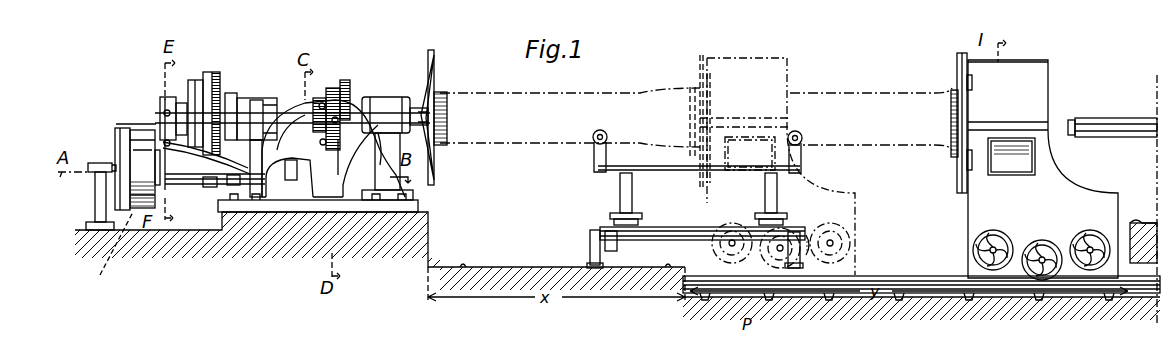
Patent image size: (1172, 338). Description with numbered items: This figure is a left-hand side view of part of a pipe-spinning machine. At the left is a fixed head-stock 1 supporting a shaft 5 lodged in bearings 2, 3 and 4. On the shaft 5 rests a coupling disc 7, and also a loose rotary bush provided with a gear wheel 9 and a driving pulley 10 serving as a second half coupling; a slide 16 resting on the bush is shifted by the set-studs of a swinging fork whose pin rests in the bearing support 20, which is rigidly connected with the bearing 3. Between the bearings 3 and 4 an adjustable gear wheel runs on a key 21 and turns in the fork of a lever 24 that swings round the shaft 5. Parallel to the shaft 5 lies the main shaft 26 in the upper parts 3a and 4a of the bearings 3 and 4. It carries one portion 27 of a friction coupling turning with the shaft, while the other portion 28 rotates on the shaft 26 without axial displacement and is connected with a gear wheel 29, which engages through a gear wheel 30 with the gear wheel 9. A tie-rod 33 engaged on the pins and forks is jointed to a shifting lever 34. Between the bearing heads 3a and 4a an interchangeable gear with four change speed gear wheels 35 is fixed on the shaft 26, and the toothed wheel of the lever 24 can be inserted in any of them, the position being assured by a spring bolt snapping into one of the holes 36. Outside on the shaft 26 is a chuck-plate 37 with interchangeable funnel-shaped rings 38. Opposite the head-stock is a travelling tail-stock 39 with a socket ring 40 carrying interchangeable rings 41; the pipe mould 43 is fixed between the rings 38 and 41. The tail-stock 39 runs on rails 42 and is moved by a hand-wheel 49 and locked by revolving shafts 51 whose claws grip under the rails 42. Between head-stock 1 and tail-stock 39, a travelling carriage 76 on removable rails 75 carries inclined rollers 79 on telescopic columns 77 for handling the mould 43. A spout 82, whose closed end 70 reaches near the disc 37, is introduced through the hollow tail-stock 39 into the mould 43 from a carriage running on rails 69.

The head-stock 1 is at (243, 207).
The bearing 2 is at (92, 200).
The bearing 3 is at (263, 190).
The upper part of bearing 3a is at (233, 93).
The bearing 4 is at (388, 185).
The upper part of bearing 4a is at (385, 100).
The shaft 5 is at (287, 177).
The coupling disc 7 is at (115, 128).
The gear wheel 9 is at (228, 185).
The driving pulley 10 is at (140, 130).
The slide 16 is at (105, 251).
The bearing support 20 is at (197, 182).
The key 21 is at (298, 180).
The lever 24 is at (337, 175).
The main shaft 26 is at (272, 98).
The portion of friction coupling 27 is at (173, 92).
The portion of friction coupling 28 is at (196, 80).
The gear wheel 29 is at (215, 72).
The gear wheel 30 is at (210, 187).
The tie-rod 33 is at (233, 187).
The shifting lever 34 is at (258, 100).
The change speed gear wheels 35 is at (334, 88).
The holes 36 is at (340, 100).
The chuck-plate 37 is at (434, 70).
The funnel-shaped rings 38 is at (447, 113).
The tail-stock 39 is at (770, 70).
The socket ring 40 is at (955, 175).
The interchangeable rings 41 is at (951, 125).
The rails 42 is at (912, 275).
The pipe mould 43 is at (497, 146).
The hand-wheel 49 is at (1044, 240).
The revolving shafts 51 is at (996, 232).
The rails 69 is at (1143, 225).
The closed end 70 is at (1074, 120).
The rails 75 is at (590, 262).
The travelling carriage 76 is at (660, 228).
The telescopic columns 77 is at (624, 191).
The inclined rollers 79 is at (595, 137).
The spout 82 is at (1120, 120).